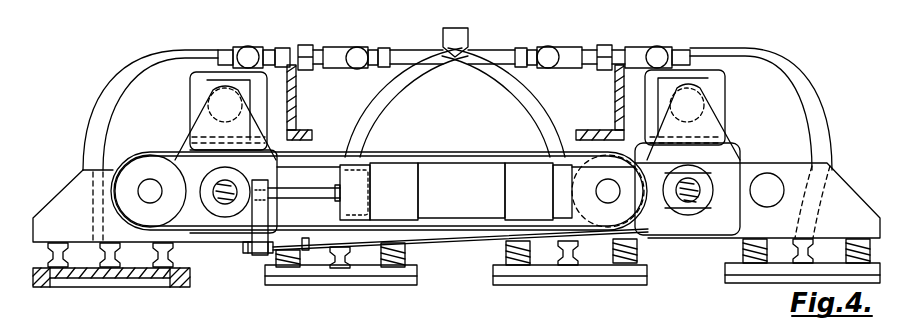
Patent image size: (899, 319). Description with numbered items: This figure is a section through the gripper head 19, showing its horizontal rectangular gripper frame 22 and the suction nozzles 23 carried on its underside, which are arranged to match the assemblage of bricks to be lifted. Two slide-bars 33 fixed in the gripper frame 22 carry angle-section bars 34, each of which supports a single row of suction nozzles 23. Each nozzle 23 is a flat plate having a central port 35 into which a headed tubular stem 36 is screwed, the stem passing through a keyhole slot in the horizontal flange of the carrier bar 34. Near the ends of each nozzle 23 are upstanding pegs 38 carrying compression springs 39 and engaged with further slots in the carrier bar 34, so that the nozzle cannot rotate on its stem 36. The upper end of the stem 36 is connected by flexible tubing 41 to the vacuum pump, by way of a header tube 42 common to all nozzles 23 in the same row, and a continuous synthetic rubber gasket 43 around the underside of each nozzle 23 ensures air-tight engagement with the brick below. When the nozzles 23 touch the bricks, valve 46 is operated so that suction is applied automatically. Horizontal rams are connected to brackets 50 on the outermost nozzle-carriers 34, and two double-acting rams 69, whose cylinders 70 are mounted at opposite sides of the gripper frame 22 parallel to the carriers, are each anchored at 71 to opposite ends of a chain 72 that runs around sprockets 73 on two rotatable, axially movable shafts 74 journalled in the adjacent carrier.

The gripper head 19 is at (848, 171).
The gripper frame 22 is at (614, 108).
The suction nozzle 23 is at (330, 283).
The slide-bar 33 is at (227, 205).
The angle-section bar 34 is at (63, 196).
The central port 35 is at (112, 280).
The headed tubular stem 36 is at (128, 282).
The upstanding peg 38 is at (65, 274).
The compression spring 39 is at (78, 250).
The flexible tubing 41 is at (112, 78).
The header tube 42 is at (357, 68).
The gasket 43 is at (268, 282).
The valve 46 is at (428, 84).
The bracket 50 is at (200, 126).
The double-acting ram 69 is at (330, 200).
The cylinder 70 is at (467, 207).
The anchorage 71 is at (255, 253).
The chain 72 is at (192, 155).
The sprocket 73 is at (115, 205).
The shaft 74 is at (150, 182).